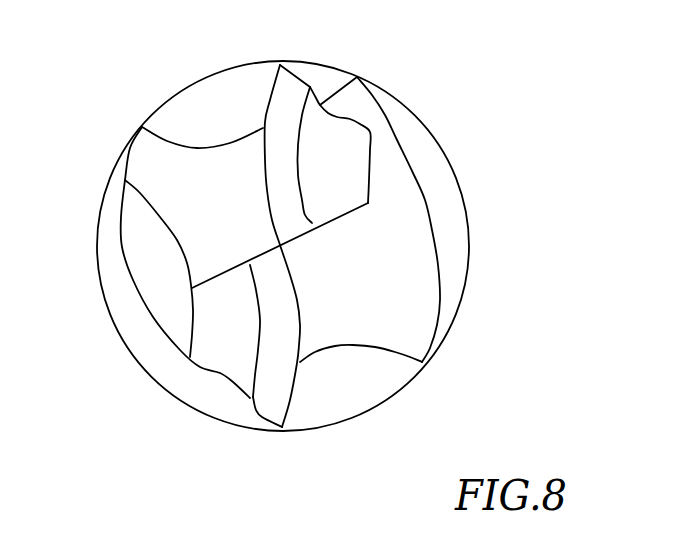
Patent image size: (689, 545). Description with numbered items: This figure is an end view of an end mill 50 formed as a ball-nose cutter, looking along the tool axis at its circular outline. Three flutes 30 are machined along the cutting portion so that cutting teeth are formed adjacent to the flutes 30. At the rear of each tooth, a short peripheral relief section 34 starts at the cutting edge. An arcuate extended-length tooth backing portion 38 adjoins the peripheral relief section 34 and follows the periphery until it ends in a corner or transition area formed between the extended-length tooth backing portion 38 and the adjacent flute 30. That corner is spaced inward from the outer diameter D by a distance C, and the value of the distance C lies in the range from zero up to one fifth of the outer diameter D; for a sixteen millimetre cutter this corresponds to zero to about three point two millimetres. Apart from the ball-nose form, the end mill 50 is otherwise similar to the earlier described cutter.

The flute 30 is at (218, 120).
The peripheral relief section 34 is at (290, 88).
The extended-length tooth backing portion 38 is at (355, 78).
The end mill 50 is at (480, 312).
The distance C is at (380, 347).
The outer diameter D is at (110, 318).